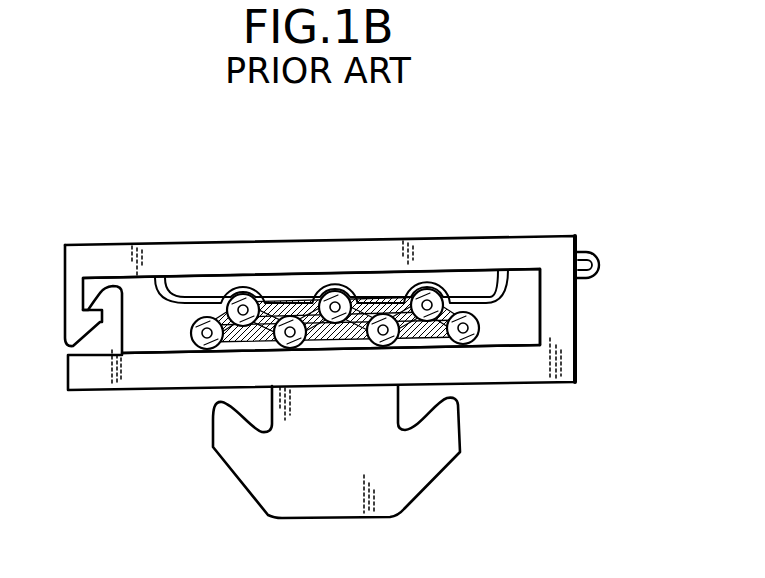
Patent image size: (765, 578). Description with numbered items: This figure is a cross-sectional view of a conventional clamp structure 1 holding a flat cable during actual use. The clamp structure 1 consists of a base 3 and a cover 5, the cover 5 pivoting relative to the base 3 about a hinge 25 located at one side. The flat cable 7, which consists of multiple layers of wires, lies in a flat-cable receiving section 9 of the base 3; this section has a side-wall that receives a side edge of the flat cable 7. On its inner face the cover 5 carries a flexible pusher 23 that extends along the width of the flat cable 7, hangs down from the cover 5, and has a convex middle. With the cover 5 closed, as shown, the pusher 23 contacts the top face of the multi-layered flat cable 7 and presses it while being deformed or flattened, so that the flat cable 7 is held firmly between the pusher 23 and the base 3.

The clamp structure 1 is at (566, 207).
The base 3 is at (540, 390).
The cover 5 is at (372, 220).
The flat cable 7 is at (472, 343).
The flat-cable receiving section 9 is at (516, 345).
The flexible pusher 23 is at (286, 298).
The hinge 25 is at (600, 267).